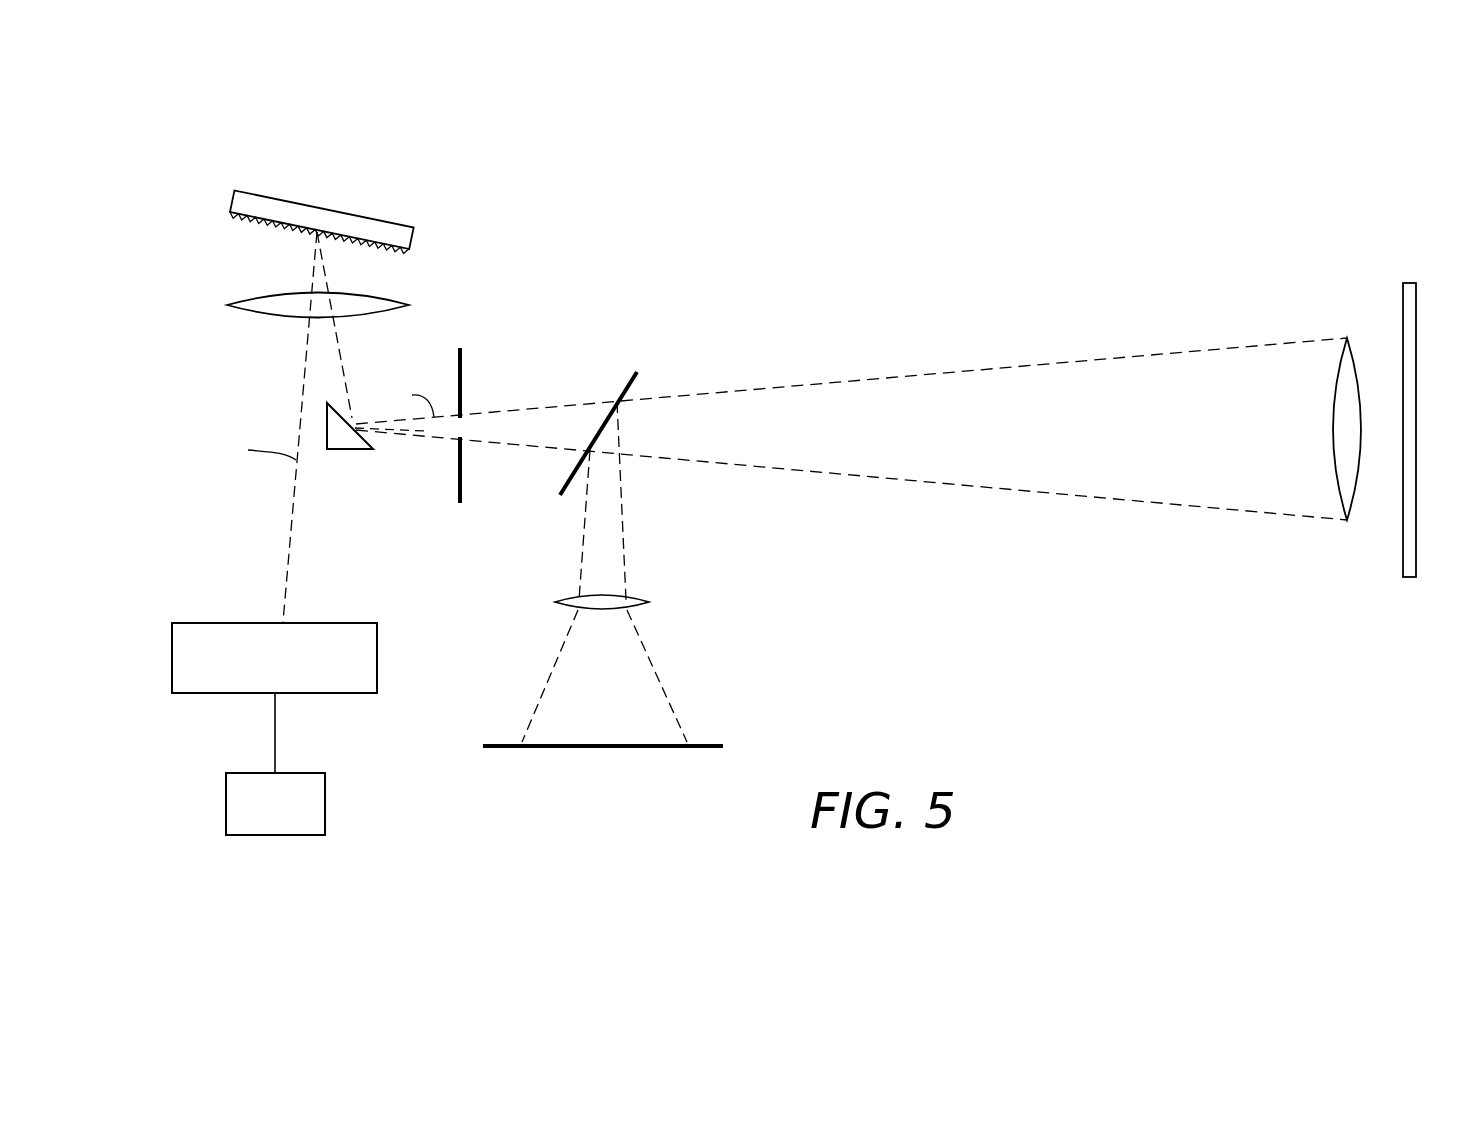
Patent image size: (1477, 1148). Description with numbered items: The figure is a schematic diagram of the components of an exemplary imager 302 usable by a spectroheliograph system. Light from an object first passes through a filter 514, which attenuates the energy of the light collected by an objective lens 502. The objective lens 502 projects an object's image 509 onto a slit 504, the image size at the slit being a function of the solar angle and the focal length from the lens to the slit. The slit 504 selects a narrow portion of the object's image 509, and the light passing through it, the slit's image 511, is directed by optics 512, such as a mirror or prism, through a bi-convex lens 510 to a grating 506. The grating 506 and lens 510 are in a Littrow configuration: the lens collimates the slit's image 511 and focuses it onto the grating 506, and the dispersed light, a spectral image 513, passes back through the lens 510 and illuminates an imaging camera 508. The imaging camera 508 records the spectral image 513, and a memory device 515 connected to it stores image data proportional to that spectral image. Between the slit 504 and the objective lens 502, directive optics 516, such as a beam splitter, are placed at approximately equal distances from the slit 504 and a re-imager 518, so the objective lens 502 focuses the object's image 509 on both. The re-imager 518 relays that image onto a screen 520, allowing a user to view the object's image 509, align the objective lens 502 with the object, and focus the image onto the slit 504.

The imager 302 is at (1037, 226).
The objective lens 502 is at (1346, 336).
The slit 504 is at (462, 367).
The grating 506 is at (391, 219).
The imaging camera 508 is at (378, 651).
The object's image 509 is at (773, 391).
The lens 510 is at (262, 320).
The slit's image 511 is at (375, 331).
The optics 512 is at (350, 451).
The spectral image 513 is at (291, 514).
The filter 514 is at (1418, 315).
The memory device 515 is at (326, 794).
The directive optics 516 is at (636, 371).
The re-imager 518 is at (637, 600).
The screen 520 is at (604, 749).